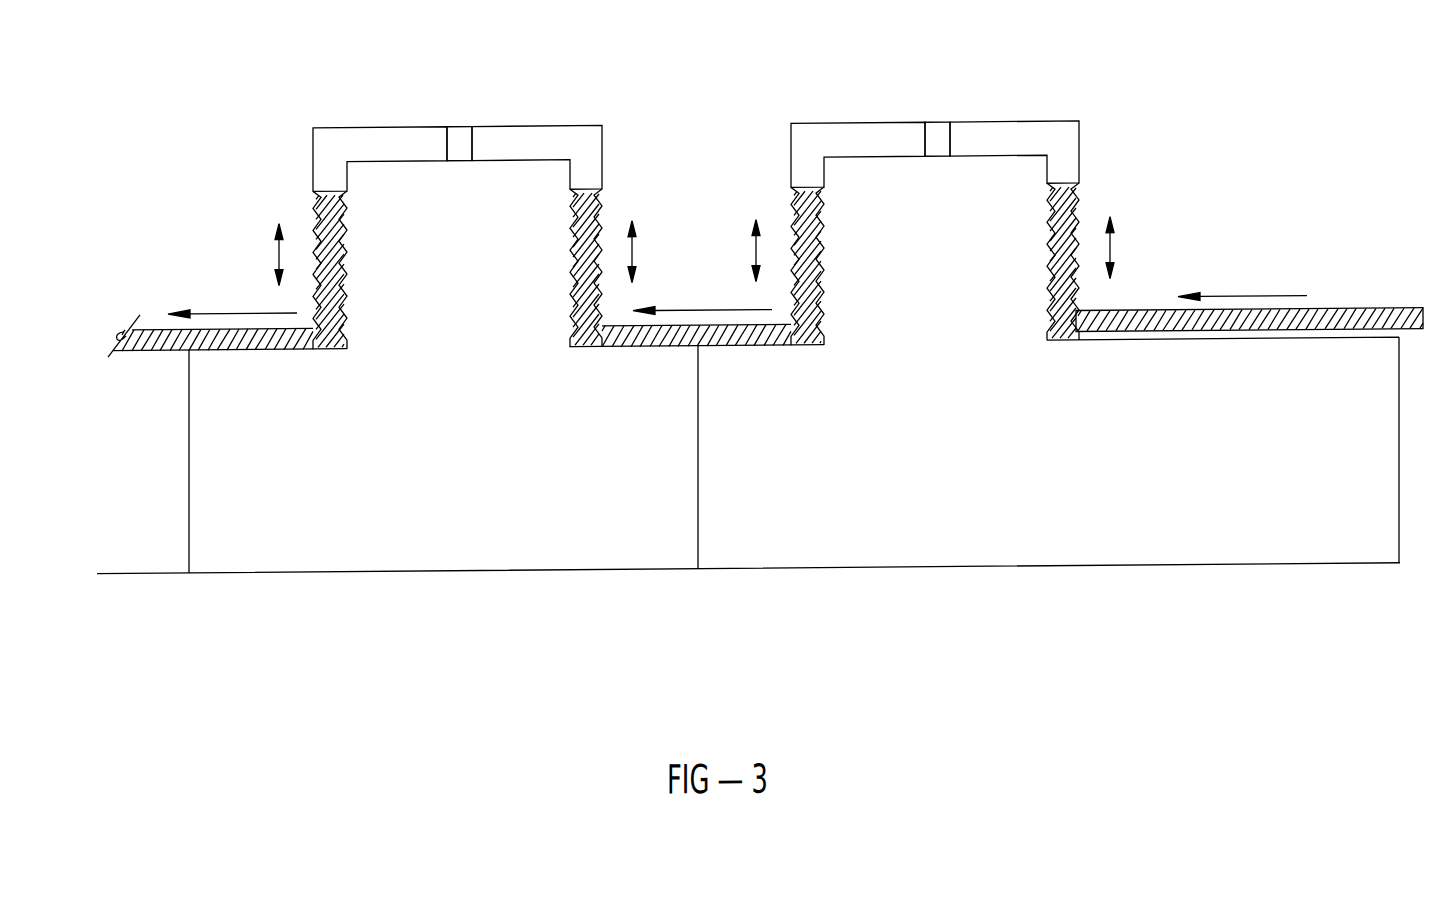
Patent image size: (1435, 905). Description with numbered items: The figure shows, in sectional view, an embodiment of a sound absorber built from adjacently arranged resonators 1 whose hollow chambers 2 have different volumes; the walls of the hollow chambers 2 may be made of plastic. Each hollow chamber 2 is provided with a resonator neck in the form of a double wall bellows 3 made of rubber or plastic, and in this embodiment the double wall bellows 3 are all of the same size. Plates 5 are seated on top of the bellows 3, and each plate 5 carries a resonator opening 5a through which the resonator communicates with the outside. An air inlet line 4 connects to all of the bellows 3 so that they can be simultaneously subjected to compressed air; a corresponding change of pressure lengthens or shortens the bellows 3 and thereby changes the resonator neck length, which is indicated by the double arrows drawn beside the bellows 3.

The resonator 1 is at (615, 606).
The hollow chamber 2 is at (430, 537).
The double wall bellows 3 is at (600, 233).
The air inlet line 4 is at (1322, 323).
The plate 5 is at (533, 138).
The resonator opening 5a is at (458, 129).